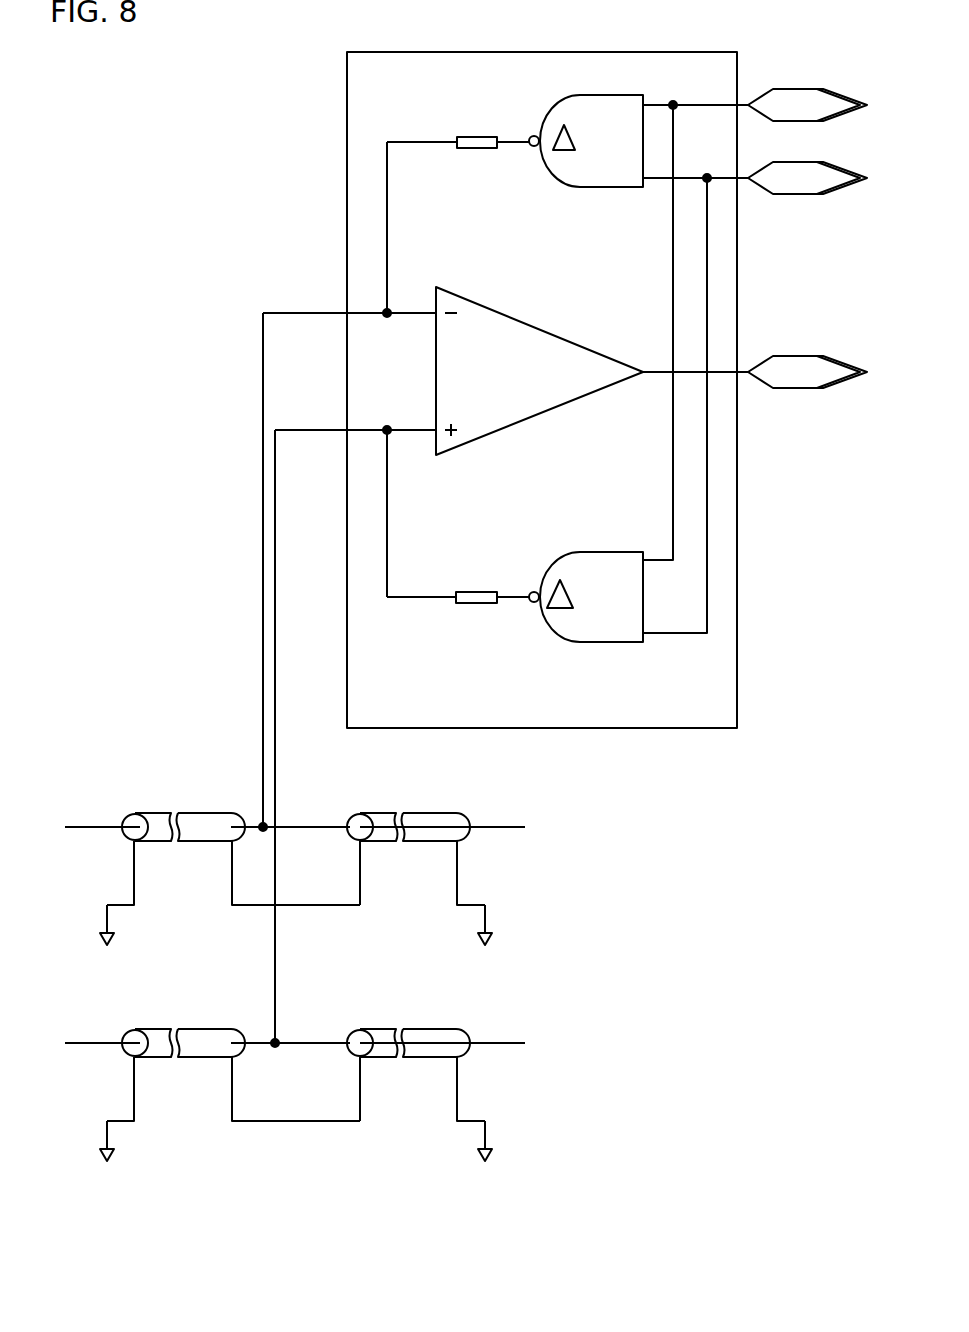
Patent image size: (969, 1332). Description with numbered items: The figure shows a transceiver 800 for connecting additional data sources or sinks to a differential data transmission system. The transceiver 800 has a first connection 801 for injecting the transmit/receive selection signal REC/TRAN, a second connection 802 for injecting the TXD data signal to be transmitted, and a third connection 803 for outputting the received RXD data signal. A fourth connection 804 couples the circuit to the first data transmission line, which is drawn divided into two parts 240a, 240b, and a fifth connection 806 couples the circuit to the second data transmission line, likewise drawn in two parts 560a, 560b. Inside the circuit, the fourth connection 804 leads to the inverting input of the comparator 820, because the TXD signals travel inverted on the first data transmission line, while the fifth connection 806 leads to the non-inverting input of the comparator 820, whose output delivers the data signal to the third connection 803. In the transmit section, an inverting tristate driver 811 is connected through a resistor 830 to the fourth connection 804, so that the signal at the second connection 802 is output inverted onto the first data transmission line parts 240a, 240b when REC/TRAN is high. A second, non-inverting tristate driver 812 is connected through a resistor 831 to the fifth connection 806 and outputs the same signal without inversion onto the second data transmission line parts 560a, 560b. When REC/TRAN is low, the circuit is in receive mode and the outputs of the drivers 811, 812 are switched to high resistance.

The transceiver 800 is at (616, 52).
The first connection 801 is at (850, 112).
The second connection 802 is at (848, 192).
The third connection 803 is at (848, 385).
The fourth connection 804 is at (292, 318).
The fifth connection 806 is at (305, 435).
The inverting tristate driver 811 is at (588, 190).
The non-inverting tristate driver 812 is at (600, 645).
The comparator 820 is at (436, 361).
The resistor 830 is at (463, 136).
The resistor 831 is at (463, 592).
The first part of the first data transmission line 240a is at (200, 843).
The second part of the first data transmission line 240b is at (422, 843).
The first part of the second data transmission line 560a is at (200, 1059).
The second part of the second data transmission line 560b is at (422, 1059).